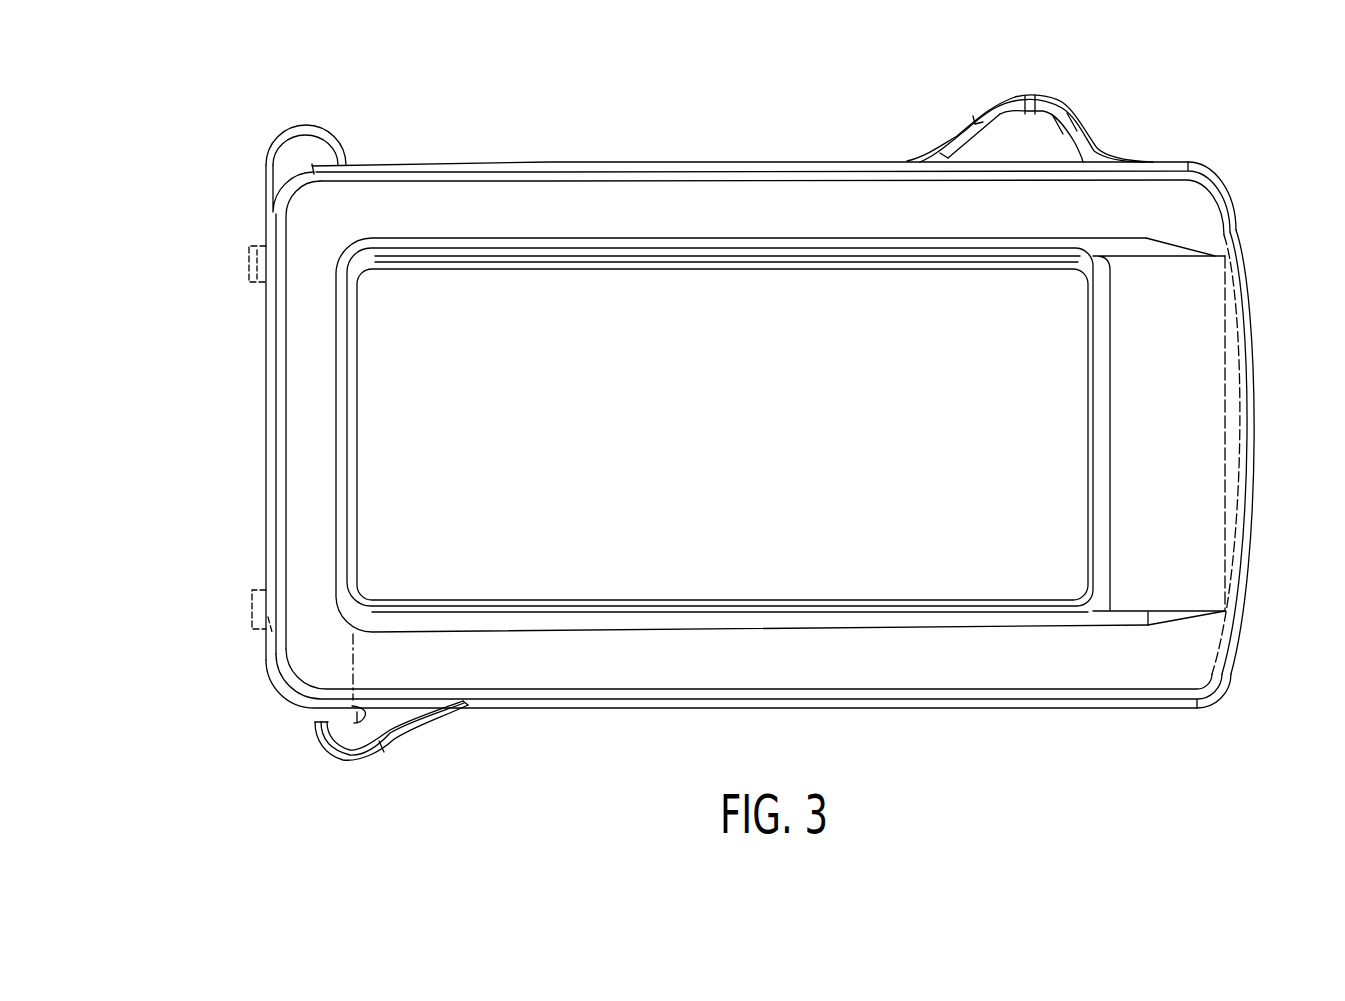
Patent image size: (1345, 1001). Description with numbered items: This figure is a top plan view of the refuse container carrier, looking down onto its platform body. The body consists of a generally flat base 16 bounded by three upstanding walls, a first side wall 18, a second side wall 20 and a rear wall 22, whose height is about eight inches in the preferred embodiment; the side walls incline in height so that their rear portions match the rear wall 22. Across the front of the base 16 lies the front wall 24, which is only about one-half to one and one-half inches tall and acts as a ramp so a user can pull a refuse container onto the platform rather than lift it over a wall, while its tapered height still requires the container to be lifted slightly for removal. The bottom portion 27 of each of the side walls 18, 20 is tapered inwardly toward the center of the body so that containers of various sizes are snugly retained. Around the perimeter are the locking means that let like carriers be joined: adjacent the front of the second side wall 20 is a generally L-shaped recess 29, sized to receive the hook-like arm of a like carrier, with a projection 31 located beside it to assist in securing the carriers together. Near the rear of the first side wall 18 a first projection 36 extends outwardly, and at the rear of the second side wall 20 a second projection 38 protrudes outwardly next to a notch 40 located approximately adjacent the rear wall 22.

The base 16 is at (396, 571).
The first side wall 18 is at (558, 159).
The second side wall 20 is at (849, 709).
The rear wall 22 is at (264, 400).
The front wall 24 is at (1185, 360).
The bottom portion 27 is at (879, 280).
The recess 29 is at (925, 151).
The projection 31 is at (1058, 92).
The first projection 36 is at (298, 153).
The second projection 38 is at (369, 764).
The notch 40 is at (320, 713).